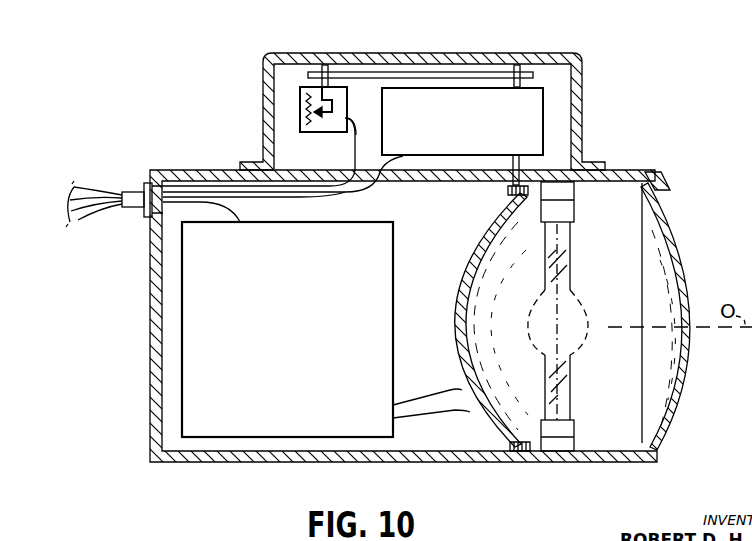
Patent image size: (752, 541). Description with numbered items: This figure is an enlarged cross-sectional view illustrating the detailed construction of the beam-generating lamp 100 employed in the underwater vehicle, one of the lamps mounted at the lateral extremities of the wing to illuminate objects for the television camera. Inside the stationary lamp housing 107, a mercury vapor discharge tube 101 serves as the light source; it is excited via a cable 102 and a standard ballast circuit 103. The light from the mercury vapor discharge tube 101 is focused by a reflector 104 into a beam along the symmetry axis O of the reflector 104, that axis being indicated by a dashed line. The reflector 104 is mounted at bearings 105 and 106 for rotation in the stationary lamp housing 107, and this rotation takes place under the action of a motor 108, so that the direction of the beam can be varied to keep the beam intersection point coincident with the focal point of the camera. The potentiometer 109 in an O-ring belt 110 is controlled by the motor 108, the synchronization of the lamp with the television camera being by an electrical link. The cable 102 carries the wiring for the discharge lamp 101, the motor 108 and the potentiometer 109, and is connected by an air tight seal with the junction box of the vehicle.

The beam-generating lamp 100 is at (108, 167).
The mercury vapor discharge tube 101 is at (574, 281).
The cable 102 is at (108, 206).
The ballast circuit 103 is at (287, 329).
The reflector 104 is at (464, 266).
The bearing 105 is at (514, 196).
The bearing 106 is at (534, 456).
The lamp housing 107 is at (660, 178).
The motor 108 is at (512, 123).
The potentiometer 109 is at (334, 93).
The O-ring belt 110 is at (451, 72).